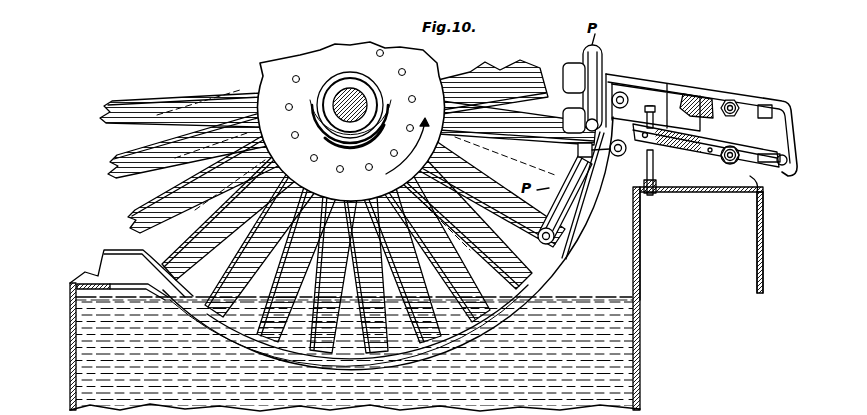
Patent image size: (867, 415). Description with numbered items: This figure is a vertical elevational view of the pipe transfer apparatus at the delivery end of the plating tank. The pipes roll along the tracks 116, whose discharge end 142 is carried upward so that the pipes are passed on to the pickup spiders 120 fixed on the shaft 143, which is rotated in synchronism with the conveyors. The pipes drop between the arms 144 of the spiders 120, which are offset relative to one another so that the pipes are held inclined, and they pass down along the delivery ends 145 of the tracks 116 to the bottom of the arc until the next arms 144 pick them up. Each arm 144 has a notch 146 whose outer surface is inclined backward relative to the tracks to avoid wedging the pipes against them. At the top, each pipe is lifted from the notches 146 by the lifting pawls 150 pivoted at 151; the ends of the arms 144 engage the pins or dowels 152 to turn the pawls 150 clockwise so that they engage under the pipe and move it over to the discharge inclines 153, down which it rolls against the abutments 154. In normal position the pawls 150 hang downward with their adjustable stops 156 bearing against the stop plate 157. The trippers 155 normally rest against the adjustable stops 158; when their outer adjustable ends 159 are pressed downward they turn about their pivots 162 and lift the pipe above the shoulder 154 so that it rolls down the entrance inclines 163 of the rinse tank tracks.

The tracks 116 is at (84, 267).
The pickup spiders 120 is at (195, 78).
The discharge end of the track 142 is at (110, 272).
The shaft 143 is at (350, 96).
The arms 144 is at (153, 100).
The delivery ends of the tracks 145 is at (550, 268).
The notches 146 is at (277, 348).
The lifting pawls 150 is at (602, 73).
The pivot 151 is at (647, 97).
The pins or dowels 152 is at (635, 100).
The discharge inclines 153 is at (626, 97).
The abutments 154 is at (672, 100).
The trippers 155 is at (747, 108).
The adjustable stops 156 is at (543, 97).
The stop plate 157 is at (643, 223).
The adjustable stops 158 is at (663, 197).
The outer adjustable ends 159 is at (781, 185).
The pivots 162 is at (730, 165).
The entrance inclines 163 is at (740, 93).